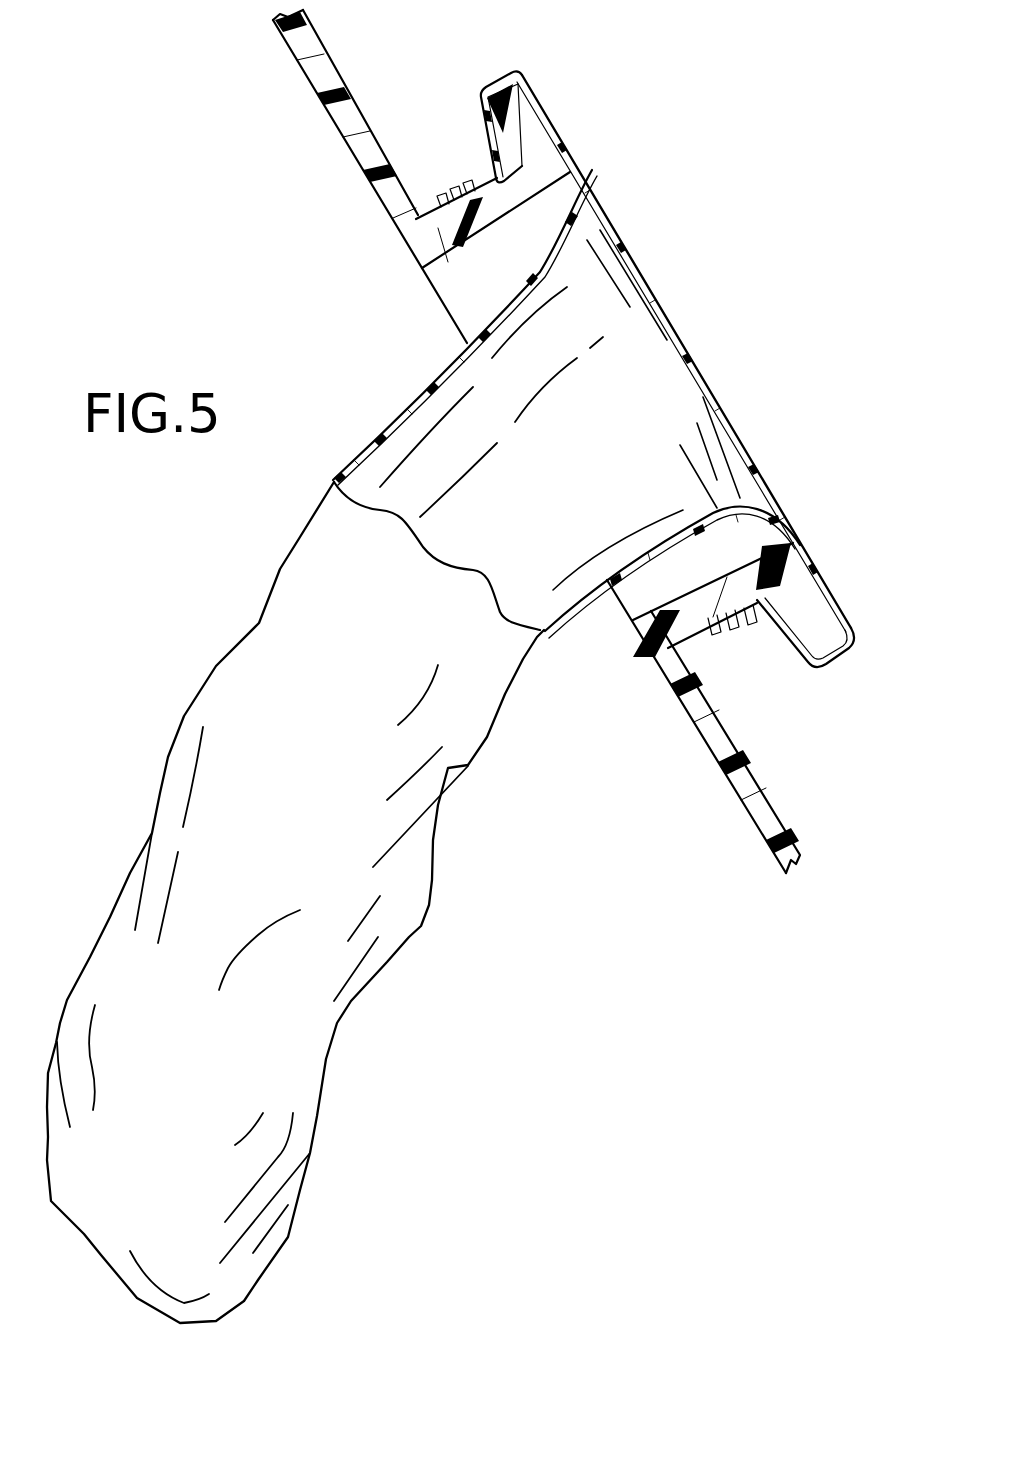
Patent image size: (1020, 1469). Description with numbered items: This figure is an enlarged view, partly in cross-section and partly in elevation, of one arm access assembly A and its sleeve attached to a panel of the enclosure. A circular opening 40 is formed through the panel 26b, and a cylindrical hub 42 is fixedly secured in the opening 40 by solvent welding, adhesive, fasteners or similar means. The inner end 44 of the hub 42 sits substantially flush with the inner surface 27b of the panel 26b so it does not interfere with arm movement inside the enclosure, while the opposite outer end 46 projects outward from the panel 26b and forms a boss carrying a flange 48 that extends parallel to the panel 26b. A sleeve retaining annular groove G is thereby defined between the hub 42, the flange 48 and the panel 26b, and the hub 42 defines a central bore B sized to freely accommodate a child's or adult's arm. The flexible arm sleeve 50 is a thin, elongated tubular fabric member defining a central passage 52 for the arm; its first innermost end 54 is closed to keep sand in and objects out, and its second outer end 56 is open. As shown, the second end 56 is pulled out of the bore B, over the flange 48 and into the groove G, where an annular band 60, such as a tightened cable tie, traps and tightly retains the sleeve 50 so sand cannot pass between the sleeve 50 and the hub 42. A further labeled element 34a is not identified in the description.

The panel 26b is at (764, 773).
The inner surface of the panel 27b is at (677, 715).
The frame rail 34a is at (634, 244).
The circular opening 40 is at (412, 238).
The cylindrical hub 42 is at (538, 112).
The inner end of the hub 44 is at (630, 640).
The outer end of the hub 46 is at (570, 172).
The flange 48 is at (541, 110).
The flexible arm sleeve 50 is at (418, 948).
The central passage 52 is at (577, 426).
The first innermost end of the sleeve 54 is at (261, 1291).
The second outer end of the sleeve 56 is at (708, 465).
The annular band 60 is at (735, 640).
The arm access assembly A is at (667, 297).
The central bore B is at (738, 548).
The sleeve retaining annular groove G is at (425, 203).